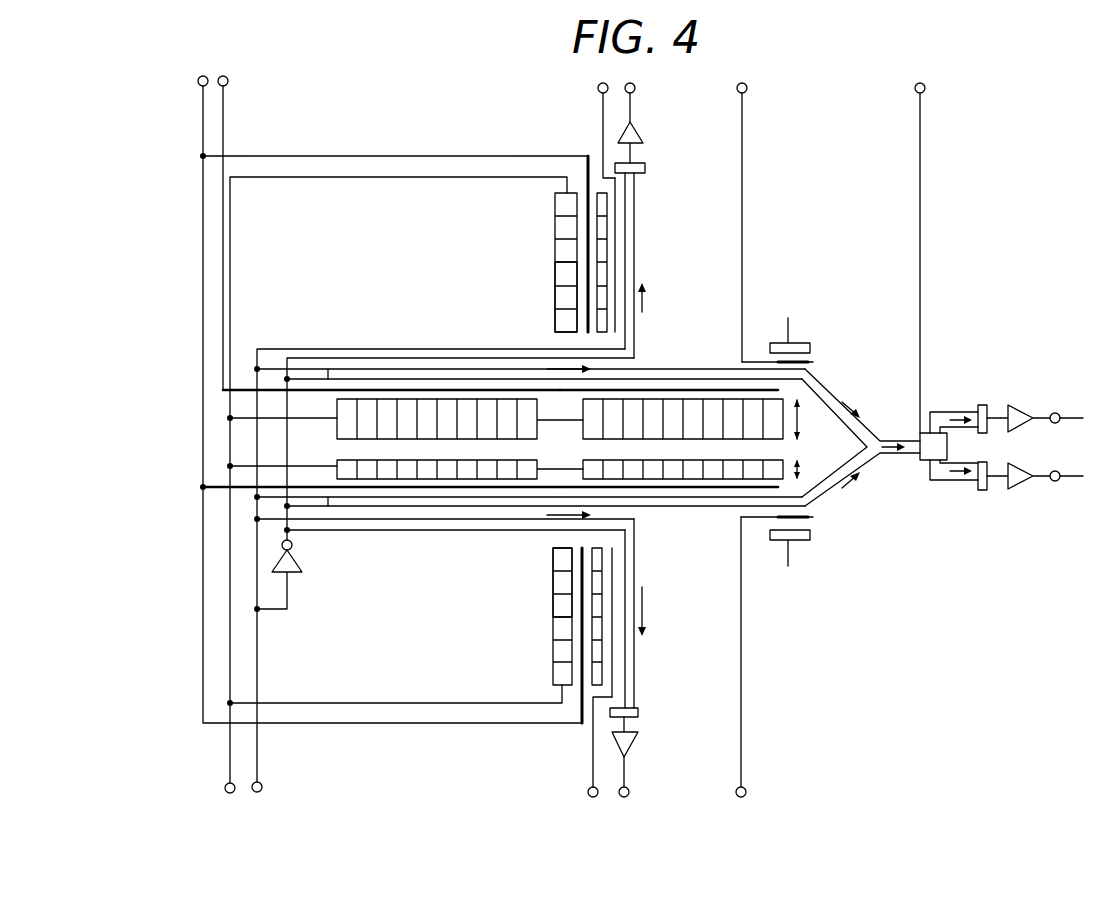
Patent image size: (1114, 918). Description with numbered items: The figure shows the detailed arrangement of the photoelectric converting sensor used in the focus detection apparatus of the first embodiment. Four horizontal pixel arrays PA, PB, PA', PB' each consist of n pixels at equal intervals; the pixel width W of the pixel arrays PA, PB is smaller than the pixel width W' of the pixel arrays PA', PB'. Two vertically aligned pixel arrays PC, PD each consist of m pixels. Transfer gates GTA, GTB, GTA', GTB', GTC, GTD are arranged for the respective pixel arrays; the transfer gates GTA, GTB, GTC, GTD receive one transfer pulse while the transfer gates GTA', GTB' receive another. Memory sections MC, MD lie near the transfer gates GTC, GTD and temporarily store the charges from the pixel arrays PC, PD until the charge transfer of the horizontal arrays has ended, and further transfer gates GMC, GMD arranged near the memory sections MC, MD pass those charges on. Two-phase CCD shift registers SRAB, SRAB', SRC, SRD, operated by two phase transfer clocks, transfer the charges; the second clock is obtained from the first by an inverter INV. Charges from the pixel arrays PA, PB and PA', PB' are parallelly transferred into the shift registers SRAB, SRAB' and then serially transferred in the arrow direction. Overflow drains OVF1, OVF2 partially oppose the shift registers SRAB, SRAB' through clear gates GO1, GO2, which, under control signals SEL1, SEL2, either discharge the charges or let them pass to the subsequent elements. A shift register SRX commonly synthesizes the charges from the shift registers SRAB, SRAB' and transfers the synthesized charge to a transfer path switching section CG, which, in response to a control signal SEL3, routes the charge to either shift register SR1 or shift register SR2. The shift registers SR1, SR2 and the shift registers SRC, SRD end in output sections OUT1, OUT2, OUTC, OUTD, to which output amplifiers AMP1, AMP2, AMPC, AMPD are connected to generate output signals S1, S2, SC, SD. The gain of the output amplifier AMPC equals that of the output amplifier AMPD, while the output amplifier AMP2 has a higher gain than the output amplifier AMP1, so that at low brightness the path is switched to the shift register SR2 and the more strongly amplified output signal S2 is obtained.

The inverter INV is at (300, 566).
The transfer gate GTD is at (587, 240).
The transfer gate GTC is at (582, 605).
The transfer gate GTA' is at (391, 349).
The transfer gate GTB' is at (669, 348).
The transfer gate GTA is at (381, 529).
The transfer gate GTB is at (669, 532).
The pixel array PA' is at (449, 368).
The pixel array PB' is at (683, 389).
The pixel array PA is at (460, 515).
The pixel array PB is at (683, 504).
The pixel width W' is at (817, 424).
The pixel width W is at (814, 464).
The memory section MD is at (555, 212).
The pixel array PD is at (555, 284).
The transfer gate GMD is at (617, 250).
The memory section MC is at (553, 665).
The pixel array PC is at (553, 563).
The transfer gate GMC is at (615, 647).
The output signal SD is at (636, 89).
The output amplifier AMPD is at (643, 134).
The output section OUTD is at (645, 169).
The CCD shift register SRD is at (636, 209).
The CCD shift register SRAB' is at (636, 325).
The output signal SC is at (629, 796).
The output amplifier AMPC is at (637, 745).
The output section OUTC is at (638, 713).
The CCD shift register SRC is at (634, 677).
The CCD shift register SRAB is at (632, 564).
The control signal SEL2 is at (747, 92).
The clear gate GO2 is at (810, 359).
The overflow drain OVF2 is at (788, 321).
The control signal SEL1 is at (746, 792).
The clear gate GO1 is at (809, 518).
The overflow drain OVF1 is at (798, 562).
The shift register SRX is at (893, 441).
The control signal SEL3 is at (924, 92).
The transfer path switching section CG is at (927, 456).
The shift register SR2 is at (936, 412).
The output section OUT2 is at (982, 405).
The output amplifier AMP2 is at (1017, 405).
The output signal S2 is at (1082, 419).
The shift register SR1 is at (947, 482).
The output section OUT1 is at (981, 491).
The output amplifier AMP1 is at (1018, 490).
The output signal S1 is at (1082, 477).